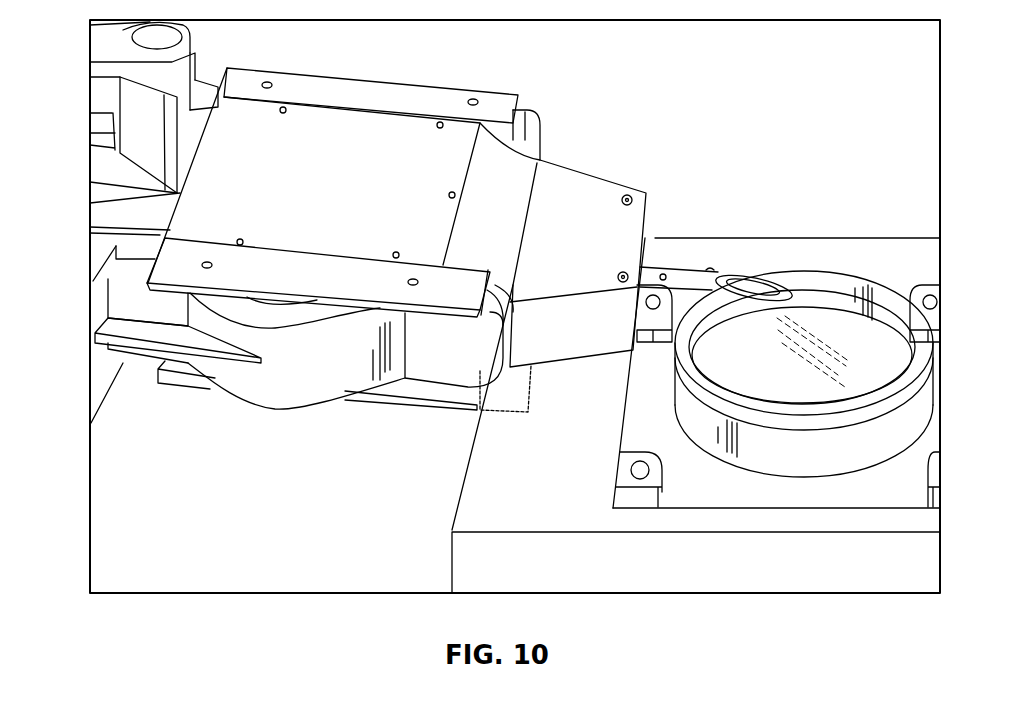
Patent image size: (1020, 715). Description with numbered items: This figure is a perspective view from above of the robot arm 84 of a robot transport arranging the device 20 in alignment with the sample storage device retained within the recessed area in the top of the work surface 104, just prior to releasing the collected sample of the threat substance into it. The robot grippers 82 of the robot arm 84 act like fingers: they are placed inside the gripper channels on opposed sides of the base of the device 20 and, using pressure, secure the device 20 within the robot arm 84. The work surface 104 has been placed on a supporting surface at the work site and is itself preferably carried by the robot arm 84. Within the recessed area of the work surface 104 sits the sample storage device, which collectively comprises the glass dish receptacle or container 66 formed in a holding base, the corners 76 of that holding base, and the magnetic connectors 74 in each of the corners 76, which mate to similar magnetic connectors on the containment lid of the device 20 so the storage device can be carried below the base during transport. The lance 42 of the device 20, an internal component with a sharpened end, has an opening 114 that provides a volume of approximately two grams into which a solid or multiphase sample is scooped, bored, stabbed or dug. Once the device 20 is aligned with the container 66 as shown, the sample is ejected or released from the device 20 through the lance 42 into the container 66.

The device 20 is at (583, 193).
The lance 42 is at (690, 277).
The opening 114 is at (770, 285).
The container 66 is at (882, 440).
The magnetic connectors 74 is at (640, 480).
The corners 76 is at (630, 497).
The robot grippers 82 is at (303, 380).
The robot arm 84 is at (123, 294).
The work surface 104 is at (773, 565).